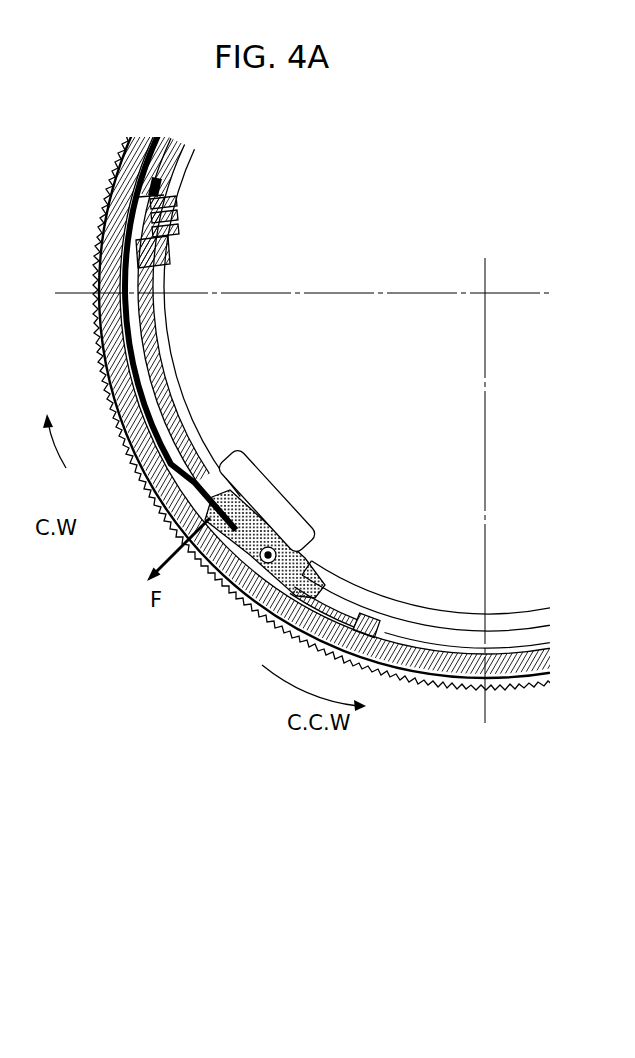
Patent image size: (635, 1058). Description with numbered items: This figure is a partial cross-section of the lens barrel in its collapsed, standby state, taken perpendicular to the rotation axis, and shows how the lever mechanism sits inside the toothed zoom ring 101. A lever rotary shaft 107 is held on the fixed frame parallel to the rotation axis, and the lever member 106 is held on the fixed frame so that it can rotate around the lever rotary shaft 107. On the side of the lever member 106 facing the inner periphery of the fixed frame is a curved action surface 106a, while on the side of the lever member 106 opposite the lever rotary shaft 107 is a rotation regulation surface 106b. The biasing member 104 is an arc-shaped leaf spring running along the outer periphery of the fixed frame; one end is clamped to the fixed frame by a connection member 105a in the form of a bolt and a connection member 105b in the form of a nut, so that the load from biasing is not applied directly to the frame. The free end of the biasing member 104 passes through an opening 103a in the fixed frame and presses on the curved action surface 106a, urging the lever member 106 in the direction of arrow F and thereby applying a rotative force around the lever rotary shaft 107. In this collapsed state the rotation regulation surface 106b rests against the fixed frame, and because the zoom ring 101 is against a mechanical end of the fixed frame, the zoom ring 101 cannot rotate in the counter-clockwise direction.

The zoom ring 101 is at (505, 687).
The opening 103a is at (279, 490).
The biasing member 104 is at (158, 432).
The connection member 105a is at (178, 203).
The connection member 105b is at (172, 231).
The lever member 106 is at (262, 568).
The curved action surface 106a is at (243, 475).
The rotation regulation surface 106b is at (305, 575).
The lever rotary shaft 107 is at (313, 570).